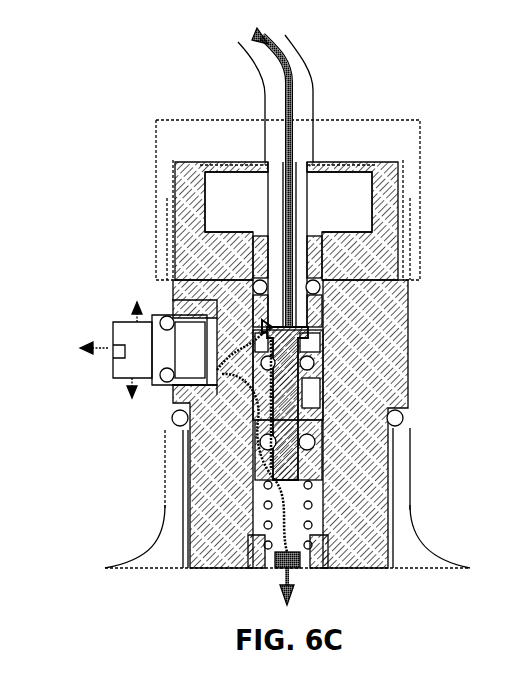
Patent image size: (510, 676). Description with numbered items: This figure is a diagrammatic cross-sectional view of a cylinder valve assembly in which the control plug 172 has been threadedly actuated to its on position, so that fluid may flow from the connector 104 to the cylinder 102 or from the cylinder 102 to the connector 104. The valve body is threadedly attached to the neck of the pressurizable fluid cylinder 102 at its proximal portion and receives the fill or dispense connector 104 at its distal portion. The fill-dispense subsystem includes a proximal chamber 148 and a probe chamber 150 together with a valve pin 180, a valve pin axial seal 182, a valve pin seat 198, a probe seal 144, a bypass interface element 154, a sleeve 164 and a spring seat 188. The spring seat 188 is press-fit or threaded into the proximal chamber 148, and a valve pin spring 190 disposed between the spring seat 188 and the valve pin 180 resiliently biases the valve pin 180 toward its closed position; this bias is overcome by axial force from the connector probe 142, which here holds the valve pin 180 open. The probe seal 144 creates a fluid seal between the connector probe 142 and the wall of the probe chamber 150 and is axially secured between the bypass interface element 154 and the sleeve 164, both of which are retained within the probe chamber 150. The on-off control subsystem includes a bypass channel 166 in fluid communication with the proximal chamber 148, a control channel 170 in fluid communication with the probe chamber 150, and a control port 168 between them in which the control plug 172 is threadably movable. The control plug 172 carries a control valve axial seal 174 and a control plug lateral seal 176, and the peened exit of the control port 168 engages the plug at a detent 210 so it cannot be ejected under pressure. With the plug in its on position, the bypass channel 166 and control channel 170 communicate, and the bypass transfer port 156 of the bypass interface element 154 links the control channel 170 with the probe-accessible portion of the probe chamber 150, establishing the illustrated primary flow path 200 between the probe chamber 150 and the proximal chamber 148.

The pressurizable fluid cylinder 102 is at (150, 552).
The fill or dispense connector 104 is at (422, 132).
The connector probe 142 is at (300, 212).
The probe seal 144 is at (315, 288).
The proximal chamber 148 is at (320, 486).
The probe chamber 150 is at (305, 330).
The bypass interface element 154 is at (309, 350).
The bypass transfer port 156 is at (262, 322).
The sleeve 164 is at (320, 258).
The bypass channel 166 is at (215, 440).
The control port 168 is at (213, 318).
The control channel 170 is at (248, 340).
The control plug 172 is at (125, 332).
The control valve axial seal 174 is at (175, 398).
The control plug lateral seal 176 is at (137, 305).
The valve pin 180 is at (300, 390).
The valve pin axial seal 182 is at (315, 450).
The spring seat 188 is at (262, 568).
The valve pin spring 190 is at (316, 512).
The valve pin seat 198 is at (394, 432).
The primary flow path 200 is at (293, 100).
The detent 210 is at (128, 392).